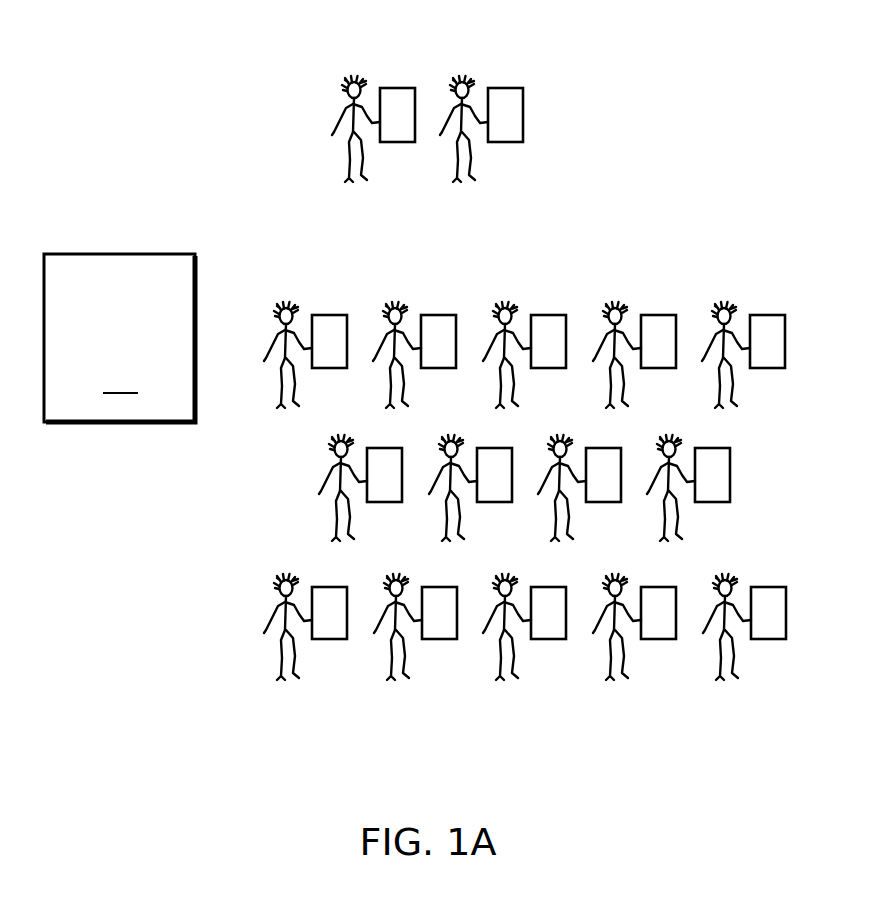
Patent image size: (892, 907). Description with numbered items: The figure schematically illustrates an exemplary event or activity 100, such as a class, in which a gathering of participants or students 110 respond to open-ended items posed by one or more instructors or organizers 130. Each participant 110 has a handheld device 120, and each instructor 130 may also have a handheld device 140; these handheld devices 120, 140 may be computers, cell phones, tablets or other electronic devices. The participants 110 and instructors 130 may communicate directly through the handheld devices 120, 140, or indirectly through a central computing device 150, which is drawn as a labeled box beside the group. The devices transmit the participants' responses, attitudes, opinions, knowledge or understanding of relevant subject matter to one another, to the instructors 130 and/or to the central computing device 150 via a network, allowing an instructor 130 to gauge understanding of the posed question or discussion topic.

The event or activity 100 is at (637, 95).
The participants or students 110 is at (722, 674).
The handheld device 120 is at (553, 315).
The instructors or organizers 130 is at (358, 73).
The handheld device 140 is at (398, 142).
The central computing device 150 is at (119, 338).